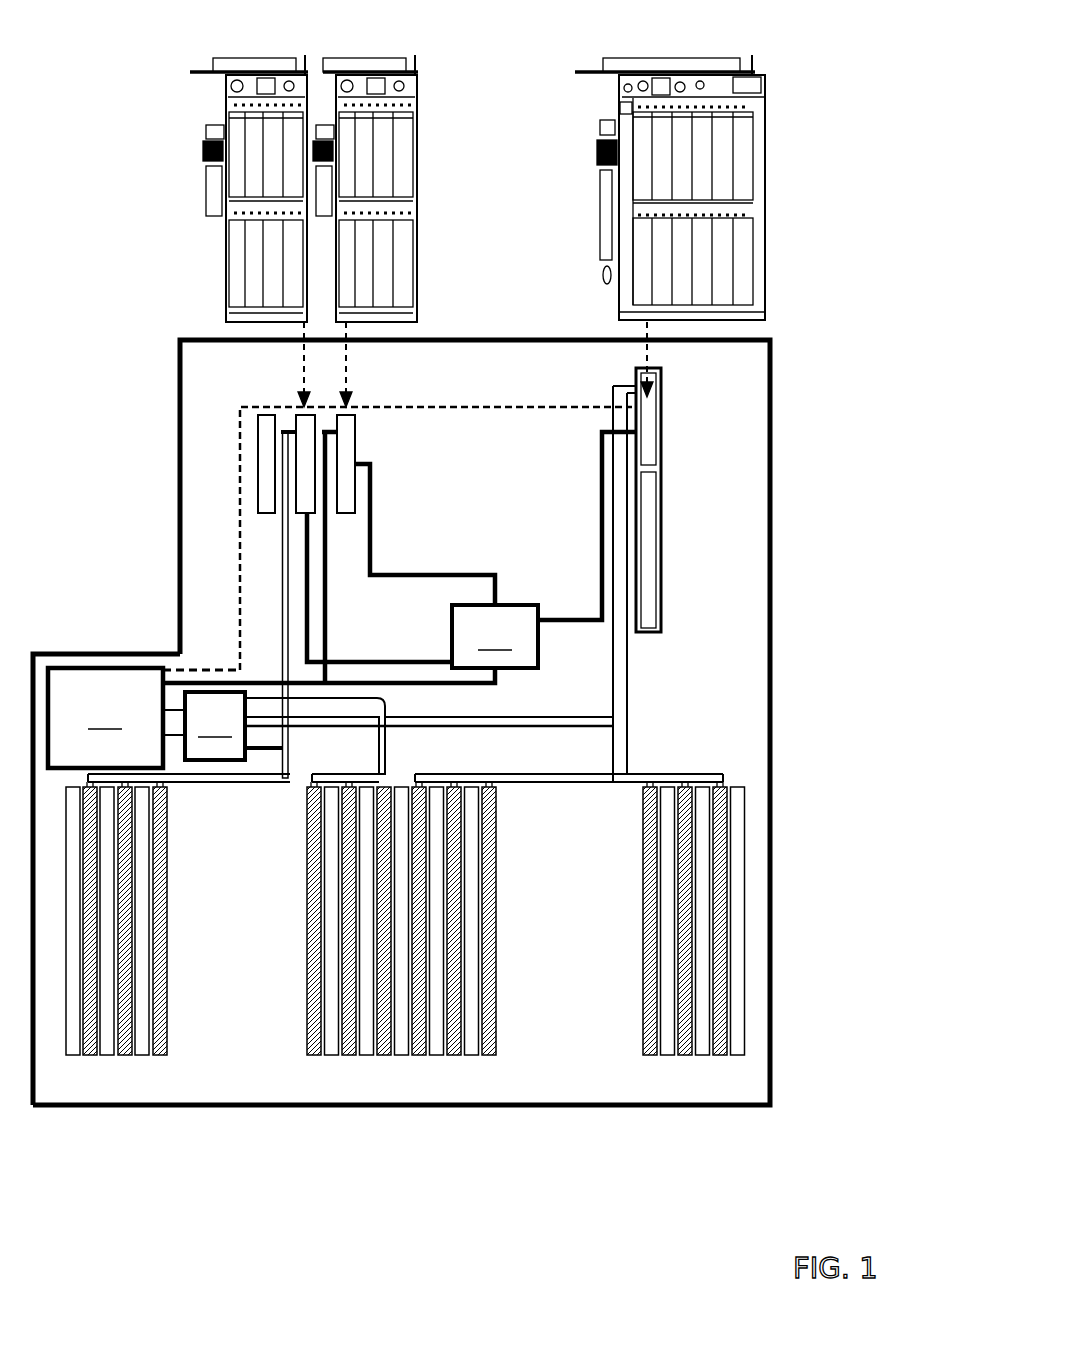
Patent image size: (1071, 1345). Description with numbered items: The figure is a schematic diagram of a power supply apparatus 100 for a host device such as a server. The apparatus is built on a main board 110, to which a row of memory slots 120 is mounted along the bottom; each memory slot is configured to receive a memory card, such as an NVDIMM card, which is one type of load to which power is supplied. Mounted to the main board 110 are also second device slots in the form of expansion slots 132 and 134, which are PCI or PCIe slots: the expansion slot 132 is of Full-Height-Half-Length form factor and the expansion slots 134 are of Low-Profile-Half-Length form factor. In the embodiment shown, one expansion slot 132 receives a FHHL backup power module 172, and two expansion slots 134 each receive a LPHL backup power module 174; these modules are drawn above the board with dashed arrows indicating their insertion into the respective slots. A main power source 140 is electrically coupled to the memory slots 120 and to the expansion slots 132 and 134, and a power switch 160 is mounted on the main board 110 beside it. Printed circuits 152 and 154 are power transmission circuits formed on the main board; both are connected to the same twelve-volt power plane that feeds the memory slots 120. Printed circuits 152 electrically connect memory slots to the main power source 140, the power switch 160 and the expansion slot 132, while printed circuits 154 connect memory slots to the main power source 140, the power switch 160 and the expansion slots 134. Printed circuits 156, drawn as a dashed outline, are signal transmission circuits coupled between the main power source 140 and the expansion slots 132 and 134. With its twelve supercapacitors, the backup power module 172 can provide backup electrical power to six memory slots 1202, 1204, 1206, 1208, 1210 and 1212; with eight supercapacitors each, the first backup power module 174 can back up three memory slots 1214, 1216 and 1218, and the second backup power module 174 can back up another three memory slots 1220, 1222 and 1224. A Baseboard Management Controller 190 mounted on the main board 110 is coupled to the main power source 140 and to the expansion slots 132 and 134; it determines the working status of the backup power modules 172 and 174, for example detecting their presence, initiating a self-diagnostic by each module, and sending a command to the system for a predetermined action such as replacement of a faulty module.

The power supply apparatus 100 is at (134, 543).
The main board 110 is at (120, 650).
The memory slots 120 is at (770, 1208).
The expansion slots 132 is at (662, 440).
The expansion slots 134 is at (305, 498).
The main power source 140 is at (105, 718).
The printed circuits 152 is at (614, 675).
The printed circuits 154 is at (286, 565).
The printed circuits 156 is at (238, 520).
The power switch 160 is at (215, 726).
The backup power module 172 is at (672, 58).
The backup power module 174 is at (243, 58).
The Baseboard Management Controller 190 is at (495, 636).
The memory slot 1202 is at (720, 1055).
The memory slot 1204 is at (685, 1055).
The memory slot 1206 is at (650, 1055).
The memory slot 1208 is at (489, 1055).
The memory slot 1210 is at (454, 1055).
The memory slot 1212 is at (419, 1055).
The memory slot 1214 is at (384, 1055).
The memory slot 1216 is at (349, 1055).
The memory slot 1218 is at (314, 1055).
The memory slot 1220 is at (160, 1055).
The memory slot 1222 is at (125, 1055).
The memory slot 1224 is at (90, 1055).